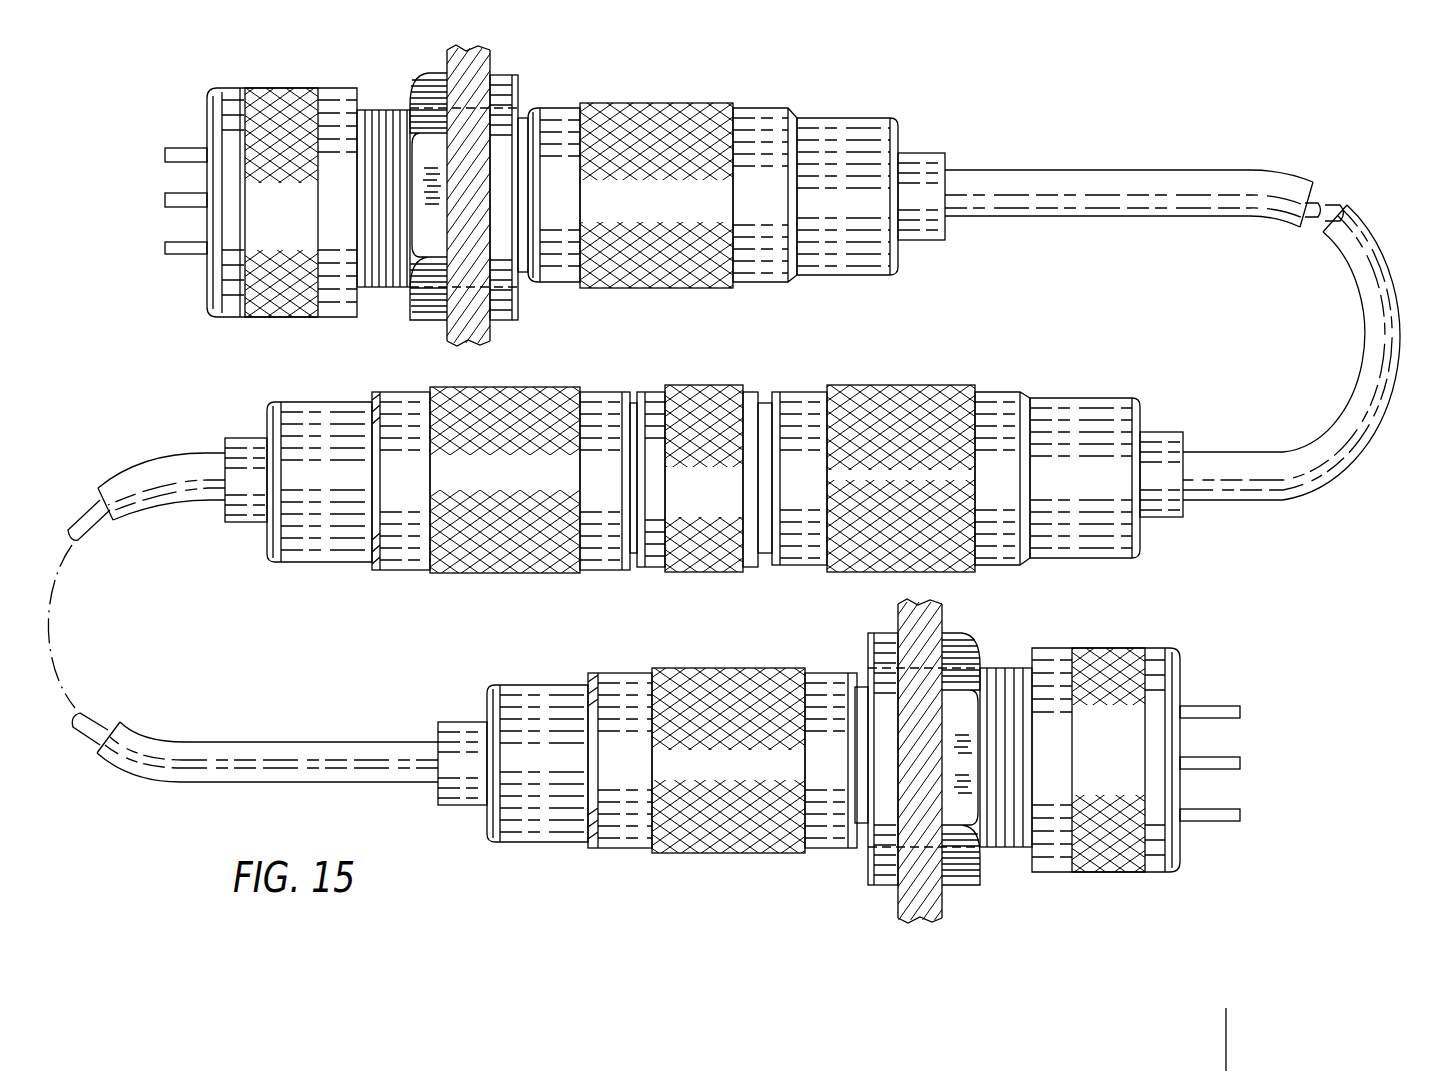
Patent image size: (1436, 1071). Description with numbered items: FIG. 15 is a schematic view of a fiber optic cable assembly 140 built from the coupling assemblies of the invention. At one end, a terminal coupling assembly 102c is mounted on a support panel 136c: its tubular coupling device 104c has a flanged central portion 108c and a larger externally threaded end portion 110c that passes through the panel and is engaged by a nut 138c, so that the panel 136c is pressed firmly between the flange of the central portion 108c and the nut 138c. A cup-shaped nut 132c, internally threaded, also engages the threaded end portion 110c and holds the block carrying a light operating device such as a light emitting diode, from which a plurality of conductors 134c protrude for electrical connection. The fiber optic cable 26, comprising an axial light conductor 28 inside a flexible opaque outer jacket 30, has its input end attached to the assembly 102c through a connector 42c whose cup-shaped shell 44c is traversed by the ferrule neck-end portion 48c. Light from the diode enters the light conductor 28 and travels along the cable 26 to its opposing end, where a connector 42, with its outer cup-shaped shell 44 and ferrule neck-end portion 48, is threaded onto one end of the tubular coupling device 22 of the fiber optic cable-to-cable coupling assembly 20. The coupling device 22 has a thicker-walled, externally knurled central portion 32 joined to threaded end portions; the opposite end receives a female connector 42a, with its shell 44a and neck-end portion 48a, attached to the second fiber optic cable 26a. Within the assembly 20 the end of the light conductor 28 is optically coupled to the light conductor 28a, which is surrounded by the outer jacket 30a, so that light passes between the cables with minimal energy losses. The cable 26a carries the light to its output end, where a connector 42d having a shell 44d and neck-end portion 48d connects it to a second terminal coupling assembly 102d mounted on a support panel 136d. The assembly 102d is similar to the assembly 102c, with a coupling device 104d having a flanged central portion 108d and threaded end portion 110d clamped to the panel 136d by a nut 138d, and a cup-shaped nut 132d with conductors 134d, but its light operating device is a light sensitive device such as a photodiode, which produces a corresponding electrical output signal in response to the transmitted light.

The fiber optic cable-to-cable coupling assembly 20 is at (845, 353).
The tubular coupling device 22 is at (756, 384).
The fiber optic cable 26 is at (158, 500).
The light conductor 28 is at (86, 522).
The outer jacket 30 is at (138, 474).
The central portion 32 is at (697, 385).
The female connector 42 is at (479, 579).
The cup-shaped shell 44 is at (310, 553).
The neck-end portion 48 is at (243, 516).
The fiber optic cable 26a is at (1242, 449).
The light conductor 28a is at (1313, 205).
The outer jacket 30a is at (1008, 172).
The female connector 42a is at (1043, 381).
The cup-shaped shell 44a is at (898, 385).
The neck-end portion 48a is at (1152, 432).
The connector 42c is at (651, 666).
The cup-shaped shell 44c is at (527, 685).
The neck-end portion 48c is at (455, 722).
The terminal coupling assembly 102c is at (821, 881).
The tubular coupling device 104c is at (1022, 721).
The flanged central portion 108c is at (876, 850).
The externally threaded end portion 110c is at (1000, 668).
The cup-shaped nut 132c is at (1100, 648).
The conductors 134c is at (1240, 815).
The support panel 136c is at (898, 614).
The nut 138c is at (960, 880).
The connector 42d is at (760, 106).
The cup-shaped shell 44d is at (662, 103).
The neck-end portion 48d is at (918, 153).
The terminal coupling assembly 102d is at (738, 148).
The tubular coupling device 104d is at (441, 189).
The flanged central portion 108d is at (512, 118).
The externally threaded end portion 110d is at (386, 110).
The cup-shaped nut 132d is at (282, 88).
The conductors 134d is at (165, 246).
The support panel 136d is at (478, 52).
The nut 138d is at (440, 73).
The fiber optic cable assembly 140 is at (1206, 117).